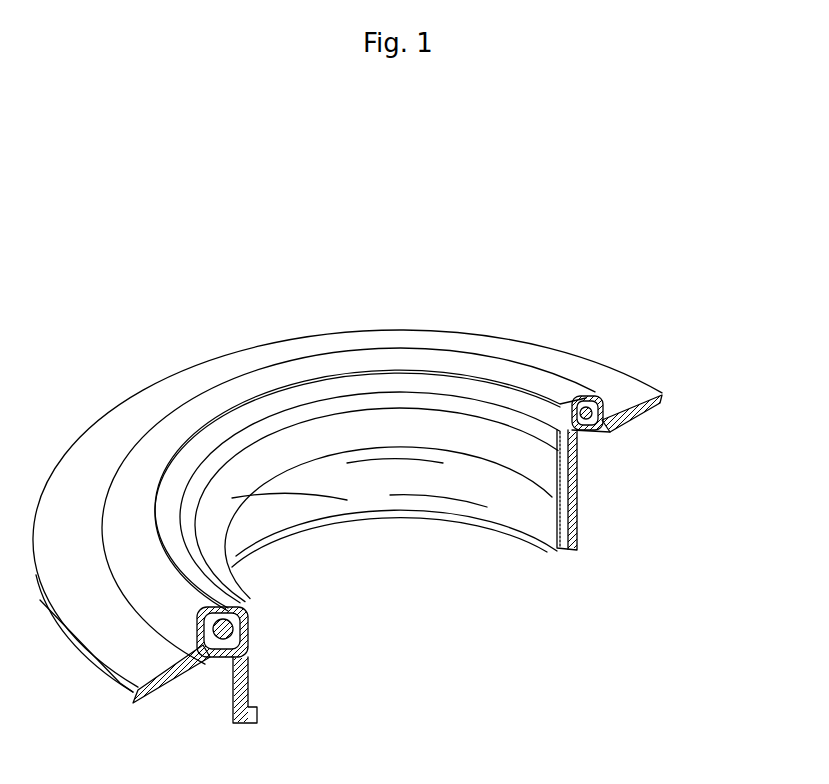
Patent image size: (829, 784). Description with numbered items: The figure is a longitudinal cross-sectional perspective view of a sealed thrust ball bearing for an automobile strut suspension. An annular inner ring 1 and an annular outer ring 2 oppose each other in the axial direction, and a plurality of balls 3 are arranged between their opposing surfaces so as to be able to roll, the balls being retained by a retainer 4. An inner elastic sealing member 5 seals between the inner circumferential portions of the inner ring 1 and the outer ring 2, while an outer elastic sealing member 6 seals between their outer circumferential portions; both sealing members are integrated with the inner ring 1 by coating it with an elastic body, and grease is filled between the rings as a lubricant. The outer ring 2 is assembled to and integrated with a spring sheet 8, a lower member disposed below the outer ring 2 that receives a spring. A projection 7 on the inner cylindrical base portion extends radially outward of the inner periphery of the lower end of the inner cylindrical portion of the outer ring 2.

The inner ring 1 is at (531, 376).
The outer ring 2 is at (583, 446).
The balls 3 is at (588, 436).
The retainer 4 is at (578, 426).
The inner elastic sealing member 5 is at (538, 477).
The outer elastic sealing member 6 is at (603, 402).
The projection 7 is at (577, 480).
The spring sheet 8 is at (663, 406).